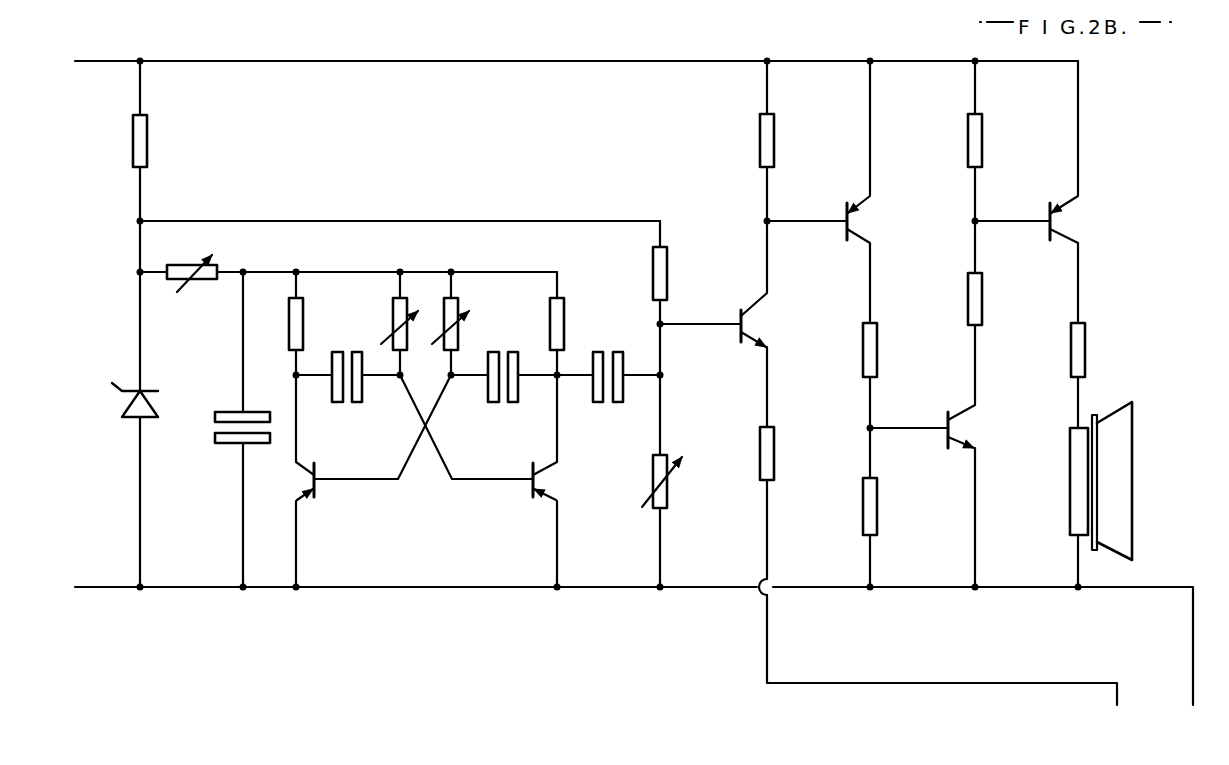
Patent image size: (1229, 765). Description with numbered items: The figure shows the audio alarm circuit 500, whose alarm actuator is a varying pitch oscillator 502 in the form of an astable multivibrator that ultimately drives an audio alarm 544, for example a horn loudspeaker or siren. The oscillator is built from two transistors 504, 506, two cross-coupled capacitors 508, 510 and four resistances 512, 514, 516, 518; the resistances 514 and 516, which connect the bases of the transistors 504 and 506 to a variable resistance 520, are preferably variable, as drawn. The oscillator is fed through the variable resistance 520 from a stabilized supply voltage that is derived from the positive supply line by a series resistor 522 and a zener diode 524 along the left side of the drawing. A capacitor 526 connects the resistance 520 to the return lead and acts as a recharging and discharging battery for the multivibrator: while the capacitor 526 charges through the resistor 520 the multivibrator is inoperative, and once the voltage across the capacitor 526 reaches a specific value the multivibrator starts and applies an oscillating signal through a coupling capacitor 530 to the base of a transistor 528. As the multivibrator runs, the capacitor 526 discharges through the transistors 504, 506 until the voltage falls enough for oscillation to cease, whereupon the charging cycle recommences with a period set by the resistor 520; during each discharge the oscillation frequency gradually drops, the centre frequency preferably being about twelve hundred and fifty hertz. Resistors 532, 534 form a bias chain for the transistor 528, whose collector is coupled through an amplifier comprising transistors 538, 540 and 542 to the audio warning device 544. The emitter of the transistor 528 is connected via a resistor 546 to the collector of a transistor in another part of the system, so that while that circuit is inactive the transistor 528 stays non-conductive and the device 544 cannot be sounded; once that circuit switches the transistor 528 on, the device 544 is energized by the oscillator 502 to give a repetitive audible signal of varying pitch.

The audio alarm circuit 500 is at (603, 56).
The varying pitch oscillator 502 is at (534, 262).
The transistor 504 is at (316, 497).
The transistor 506 is at (542, 497).
The capacitor 508 is at (366, 396).
The capacitor 510 is at (520, 396).
The resistance 512 is at (289, 308).
The variable resistance 514 is at (393, 310).
The variable resistance 516 is at (445, 310).
The resistance 518 is at (562, 310).
The variable resistance 520 is at (194, 250).
The series resistor 522 is at (147, 127).
The zener diode 524 is at (134, 419).
The capacitor 526 is at (232, 445).
The transistor 528 is at (758, 313).
The coupling capacitor 530 is at (621, 343).
The resistor 532 is at (668, 291).
The resistor 534 is at (666, 506).
The transistor 538 is at (865, 236).
The transistor 540 is at (965, 410).
The transistor 542 is at (1068, 236).
The audio alarm 544 is at (1133, 519).
The resistor 546 is at (774, 473).